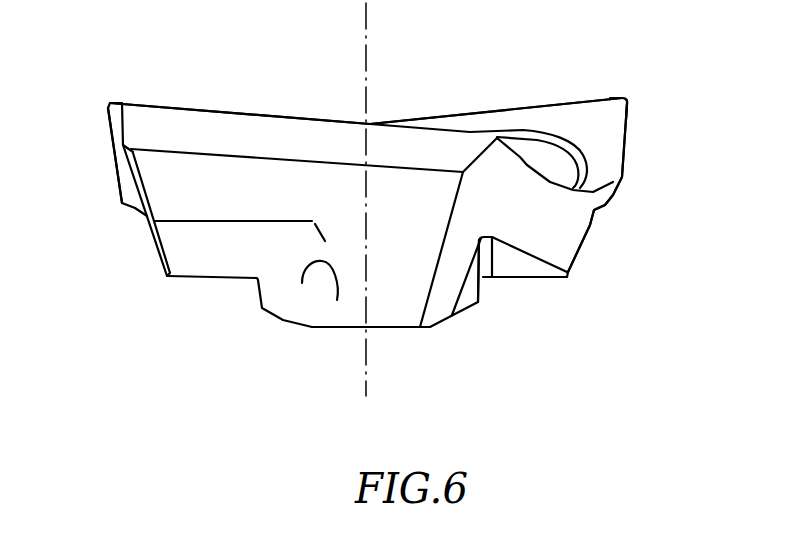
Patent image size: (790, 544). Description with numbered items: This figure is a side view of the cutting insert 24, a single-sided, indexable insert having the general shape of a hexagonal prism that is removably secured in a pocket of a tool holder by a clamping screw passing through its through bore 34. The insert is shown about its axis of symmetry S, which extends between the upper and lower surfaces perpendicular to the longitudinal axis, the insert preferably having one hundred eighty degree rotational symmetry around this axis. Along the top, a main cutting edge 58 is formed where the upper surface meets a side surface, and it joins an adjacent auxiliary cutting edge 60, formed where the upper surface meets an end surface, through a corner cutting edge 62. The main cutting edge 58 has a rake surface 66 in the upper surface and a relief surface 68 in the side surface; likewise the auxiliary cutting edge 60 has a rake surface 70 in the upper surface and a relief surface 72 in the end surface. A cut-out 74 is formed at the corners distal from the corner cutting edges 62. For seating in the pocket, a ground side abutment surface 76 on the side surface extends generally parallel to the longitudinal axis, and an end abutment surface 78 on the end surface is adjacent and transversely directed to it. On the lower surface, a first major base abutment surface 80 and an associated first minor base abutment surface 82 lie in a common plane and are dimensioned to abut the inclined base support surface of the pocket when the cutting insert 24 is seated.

The axis of symmetry S is at (367, 58).
The cutting insert 24 is at (480, 332).
The through bore 34 is at (320, 277).
The main cutting edge 58 is at (160, 102).
The auxiliary cutting edge 60 is at (108, 137).
The corner cutting edge 62 is at (110, 102).
The rake surface 66 is at (583, 120).
The relief surface 68 is at (227, 133).
The rake surface 70 is at (603, 158).
The relief surface 72 is at (113, 147).
The cut-out 74 is at (574, 228).
The side abutment surface 76 is at (402, 302).
The end abutment surface 78 is at (148, 217).
The first major base abutment surface 80 is at (185, 252).
The first minor base abutment surface 82 is at (522, 263).